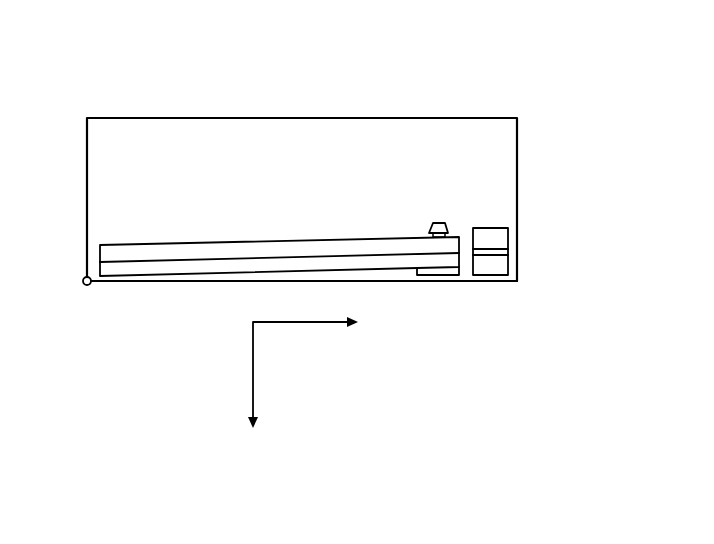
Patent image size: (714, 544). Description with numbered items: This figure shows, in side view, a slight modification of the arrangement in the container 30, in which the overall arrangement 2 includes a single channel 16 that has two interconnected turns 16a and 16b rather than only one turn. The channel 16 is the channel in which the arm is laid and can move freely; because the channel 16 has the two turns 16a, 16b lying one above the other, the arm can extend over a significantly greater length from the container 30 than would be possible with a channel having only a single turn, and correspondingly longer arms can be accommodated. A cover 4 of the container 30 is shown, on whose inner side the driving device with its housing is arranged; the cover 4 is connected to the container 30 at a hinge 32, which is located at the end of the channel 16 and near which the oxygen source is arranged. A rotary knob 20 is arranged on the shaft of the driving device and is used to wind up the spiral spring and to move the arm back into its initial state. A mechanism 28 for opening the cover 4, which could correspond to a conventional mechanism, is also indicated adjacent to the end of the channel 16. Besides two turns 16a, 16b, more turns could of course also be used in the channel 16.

The device 2 is at (393, 88).
The container 30 is at (458, 118).
The cover 4 is at (455, 282).
The hinge 32 is at (85, 285).
The first channel 16 is at (196, 284).
The turn 16a is at (141, 268).
The turn 16b is at (238, 250).
The rotary knob 20 is at (437, 222).
The mechanism for opening the cover 28 is at (519, 236).